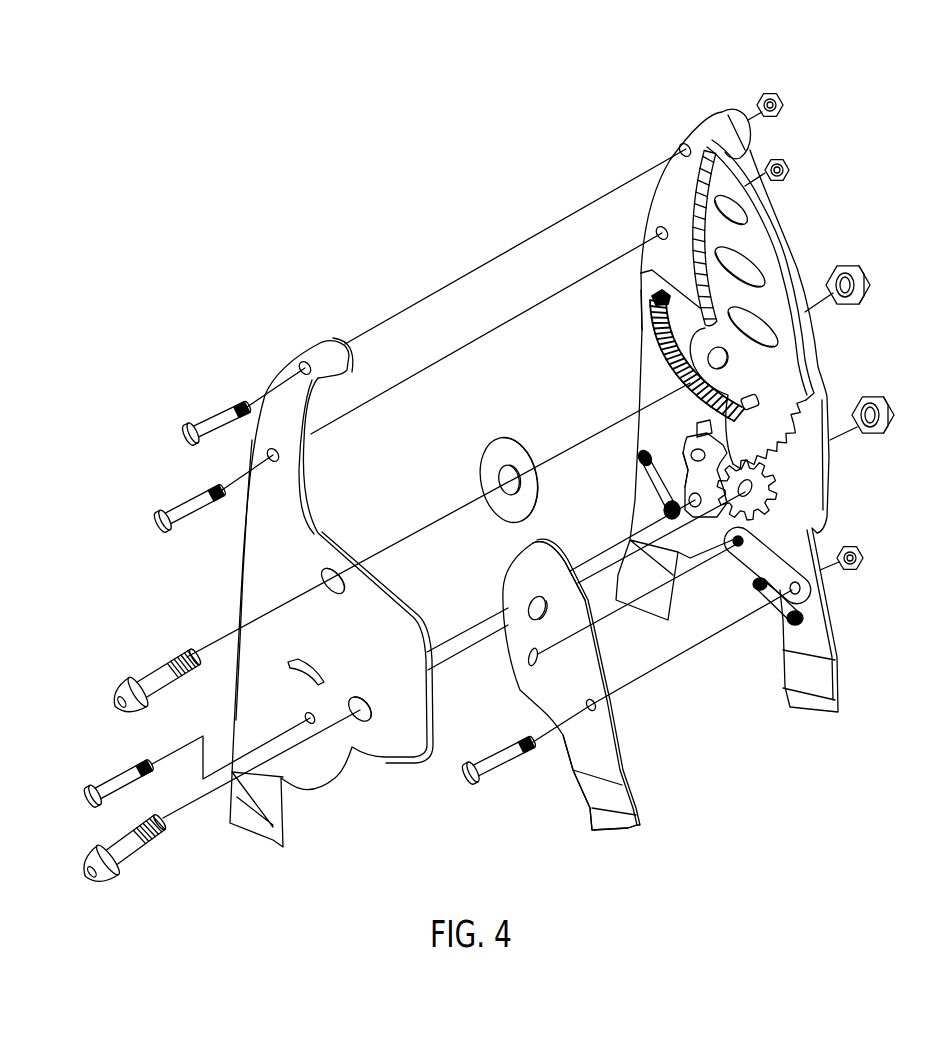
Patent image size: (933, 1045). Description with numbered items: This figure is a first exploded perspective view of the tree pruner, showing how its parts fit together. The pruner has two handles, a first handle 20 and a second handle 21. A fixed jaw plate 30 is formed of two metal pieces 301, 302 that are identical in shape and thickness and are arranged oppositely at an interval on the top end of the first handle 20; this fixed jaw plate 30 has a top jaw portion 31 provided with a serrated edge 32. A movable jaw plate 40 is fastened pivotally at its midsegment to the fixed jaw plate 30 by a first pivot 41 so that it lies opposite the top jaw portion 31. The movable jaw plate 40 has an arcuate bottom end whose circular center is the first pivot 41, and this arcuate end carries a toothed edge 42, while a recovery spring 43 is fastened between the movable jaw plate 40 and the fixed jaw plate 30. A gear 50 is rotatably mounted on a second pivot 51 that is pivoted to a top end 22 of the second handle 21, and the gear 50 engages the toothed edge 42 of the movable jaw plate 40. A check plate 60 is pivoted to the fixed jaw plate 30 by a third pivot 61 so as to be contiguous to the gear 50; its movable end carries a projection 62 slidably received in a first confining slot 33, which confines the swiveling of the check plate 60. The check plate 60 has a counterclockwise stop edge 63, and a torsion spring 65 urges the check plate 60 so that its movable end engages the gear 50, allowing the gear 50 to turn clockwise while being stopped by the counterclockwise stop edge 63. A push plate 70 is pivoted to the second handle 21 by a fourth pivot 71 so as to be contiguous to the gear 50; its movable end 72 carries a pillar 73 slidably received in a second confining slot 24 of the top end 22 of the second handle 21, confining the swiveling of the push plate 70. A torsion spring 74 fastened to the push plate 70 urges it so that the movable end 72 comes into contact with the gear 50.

The first handle 20 is at (585, 684).
The second handle 21 is at (638, 823).
The top end of the second handle 22 is at (598, 640).
The second confining slot 24 is at (522, 656).
The fixed jaw plate 30 is at (847, 461).
The metal piece 301 is at (242, 545).
The metal piece 302 is at (643, 300).
The top jaw portion 31 is at (312, 462).
The serrated edge 32 is at (662, 173).
The first confining slot 33 is at (308, 678).
The movable jaw plate 40 is at (790, 352).
The first pivot 41 is at (147, 670).
The toothed edge 42 is at (775, 435).
The recovery spring 43 is at (655, 340).
The gear 50 is at (818, 522).
The second pivot 51 is at (125, 853).
The check plate 60 is at (637, 452).
The third pivot 61 is at (118, 775).
The projection 62 is at (694, 448).
The counterclockwise stop edge 63 is at (698, 425).
The torsion spring 65 is at (665, 505).
The push plate 70 is at (795, 605).
The fourth pivot 71 is at (507, 763).
The movable end of the push plate 72 is at (755, 592).
The pillar 73 is at (733, 548).
The torsion spring 74 is at (790, 622).